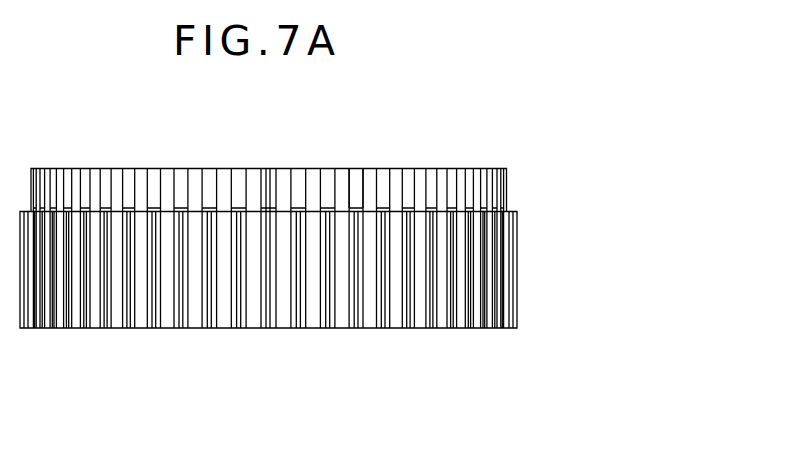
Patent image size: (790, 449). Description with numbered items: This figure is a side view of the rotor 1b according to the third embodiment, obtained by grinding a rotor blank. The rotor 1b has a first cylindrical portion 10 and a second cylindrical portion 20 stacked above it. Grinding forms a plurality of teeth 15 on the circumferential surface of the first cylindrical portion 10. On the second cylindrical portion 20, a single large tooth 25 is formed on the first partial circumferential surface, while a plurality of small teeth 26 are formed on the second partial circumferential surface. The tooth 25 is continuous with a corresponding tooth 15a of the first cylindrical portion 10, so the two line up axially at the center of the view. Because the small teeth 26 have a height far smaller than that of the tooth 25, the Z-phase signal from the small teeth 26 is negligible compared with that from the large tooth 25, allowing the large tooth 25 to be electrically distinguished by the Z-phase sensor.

The rotor 1b is at (345, 259).
The first cylindrical portion 10 is at (345, 317).
The second cylindrical portion 20 is at (346, 156).
The tooth 25 is at (266, 172).
The teeth 26 is at (357, 180).
The teeth 15 is at (362, 320).
The tooth 15a is at (270, 317).